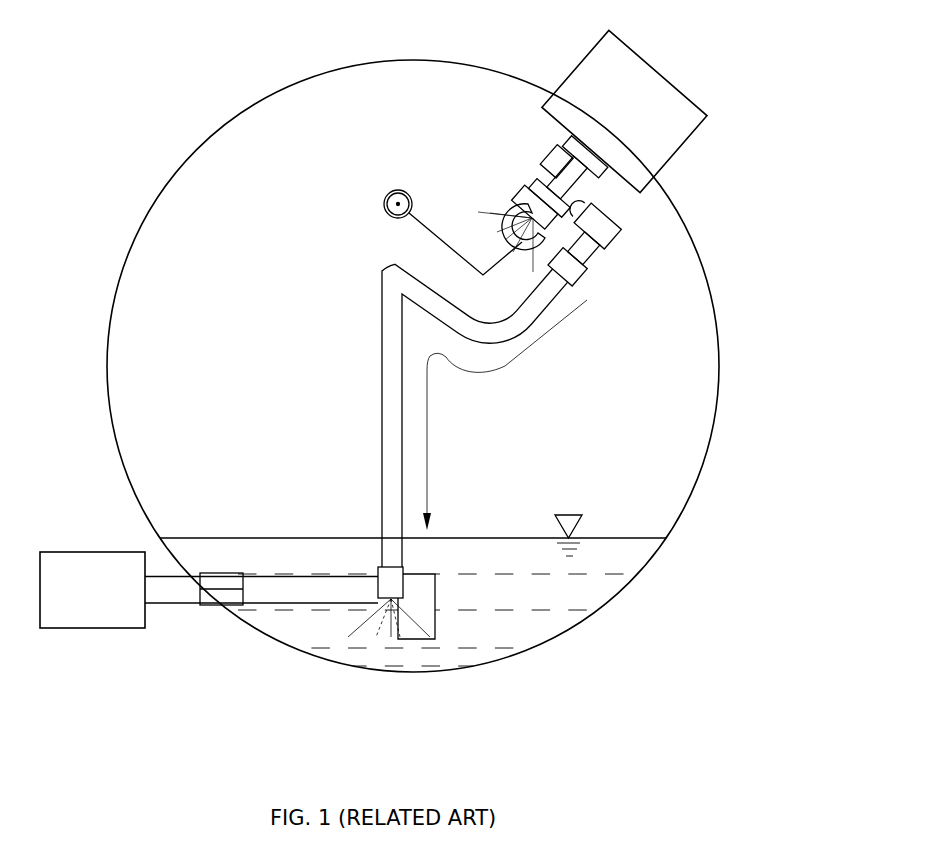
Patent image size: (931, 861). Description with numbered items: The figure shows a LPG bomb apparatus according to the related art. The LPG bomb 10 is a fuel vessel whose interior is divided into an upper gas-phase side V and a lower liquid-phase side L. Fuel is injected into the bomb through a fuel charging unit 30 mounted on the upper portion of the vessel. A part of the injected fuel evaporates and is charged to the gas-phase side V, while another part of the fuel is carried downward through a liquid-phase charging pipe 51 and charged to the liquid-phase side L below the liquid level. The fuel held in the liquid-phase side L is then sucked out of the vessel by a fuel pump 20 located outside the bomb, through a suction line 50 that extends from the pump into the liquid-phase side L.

The LPG bomb 10 is at (165, 181).
The fuel pump 20 is at (90, 630).
The fuel charging unit 30 is at (670, 84).
The fuel supply pipe 50 is at (302, 618).
The liquid-phase charging pipe 51 is at (392, 408).
The gas-phase side V is at (297, 112).
The liquid-phase side L is at (556, 617).